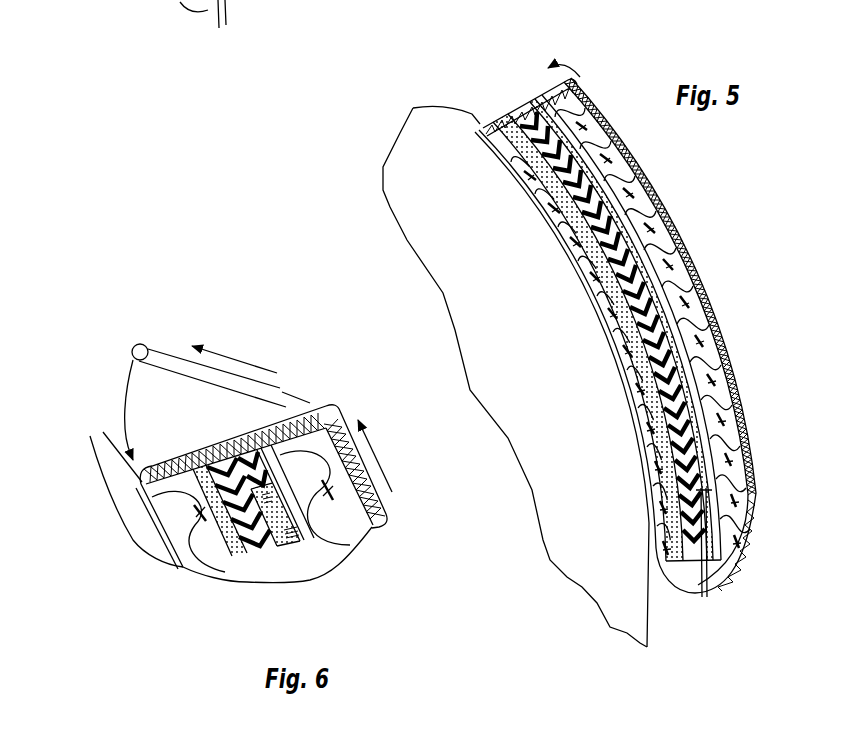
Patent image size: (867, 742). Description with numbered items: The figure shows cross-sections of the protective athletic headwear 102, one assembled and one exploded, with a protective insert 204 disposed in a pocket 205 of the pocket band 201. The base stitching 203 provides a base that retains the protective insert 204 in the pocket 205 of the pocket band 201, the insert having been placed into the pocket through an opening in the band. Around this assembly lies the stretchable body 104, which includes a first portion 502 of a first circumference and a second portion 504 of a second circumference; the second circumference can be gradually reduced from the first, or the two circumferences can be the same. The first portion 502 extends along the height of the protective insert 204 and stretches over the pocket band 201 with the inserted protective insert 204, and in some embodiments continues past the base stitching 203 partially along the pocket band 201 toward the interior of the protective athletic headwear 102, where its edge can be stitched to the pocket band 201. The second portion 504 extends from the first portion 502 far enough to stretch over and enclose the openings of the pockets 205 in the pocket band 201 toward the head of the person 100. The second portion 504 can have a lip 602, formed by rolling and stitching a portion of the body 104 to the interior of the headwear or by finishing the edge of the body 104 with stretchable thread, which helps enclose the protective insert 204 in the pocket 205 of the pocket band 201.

In FIG. 5, the person 100 is at (426, 299).
In FIG. 6, the person 100 is at (122, 515).
In FIG. 6, the protective athletic headwear 102 is at (350, 589).
In FIG. 5, the body 104 is at (730, 218).
In FIG. 5, the pocket band 201 is at (618, 383).
In FIG. 6, the pocket band 201 is at (268, 592).
In FIG. 5, the base stitching 203 is at (702, 557).
In FIG. 5, the protective insert 204 is at (545, 140).
In FIG. 6, the protective insert 204 is at (303, 565).
In FIG. 5, the pocket 205 is at (524, 98).
In FIG. 6, the pocket 205 is at (236, 444).
In FIG. 5, the first portion 502 is at (732, 350).
In FIG. 6, the first portion 502 is at (378, 498).
In FIG. 5, the second portion 504 is at (537, 90).
In FIG. 6, the second portion 504 is at (281, 388).
In FIG. 6, the lip 602 is at (137, 344).